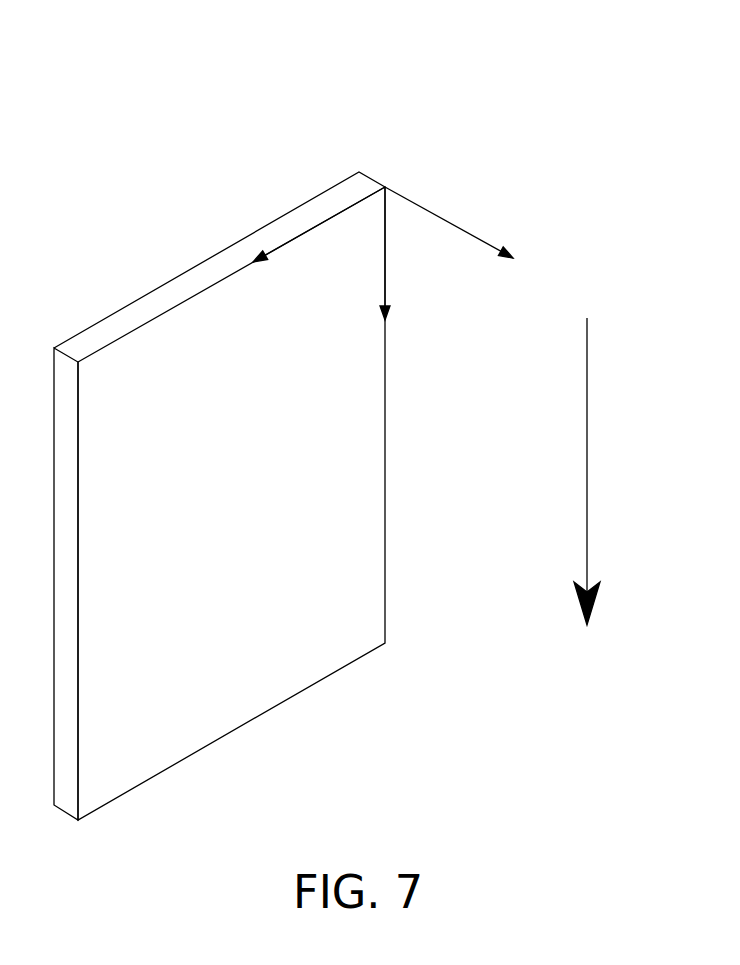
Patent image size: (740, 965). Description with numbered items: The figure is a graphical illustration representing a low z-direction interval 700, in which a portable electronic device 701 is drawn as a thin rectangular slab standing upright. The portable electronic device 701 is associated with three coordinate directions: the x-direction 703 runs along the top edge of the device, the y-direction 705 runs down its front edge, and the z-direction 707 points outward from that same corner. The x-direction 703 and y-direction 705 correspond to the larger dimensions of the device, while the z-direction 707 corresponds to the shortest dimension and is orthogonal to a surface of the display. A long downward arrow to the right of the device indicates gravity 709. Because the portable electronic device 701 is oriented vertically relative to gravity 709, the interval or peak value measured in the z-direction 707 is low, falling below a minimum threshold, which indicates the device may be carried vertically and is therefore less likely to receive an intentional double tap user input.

The low z-direction interval 700 is at (550, 46).
The portable electronic device 701 is at (323, 423).
The x-direction 703 is at (328, 218).
The y-direction 705 is at (388, 255).
The z-direction 707 is at (448, 222).
The gravity 709 is at (589, 353).